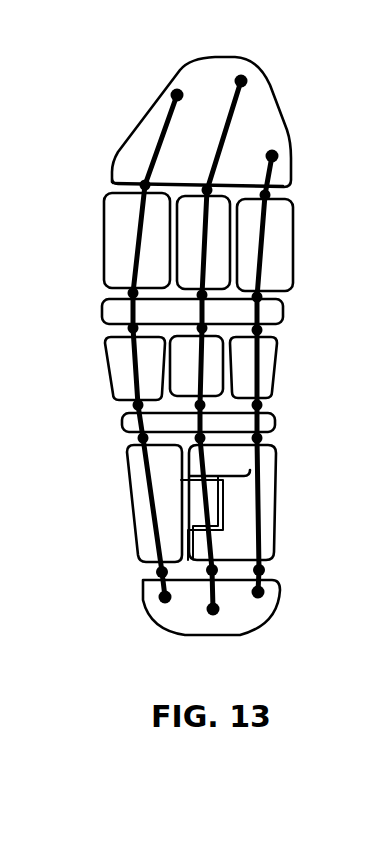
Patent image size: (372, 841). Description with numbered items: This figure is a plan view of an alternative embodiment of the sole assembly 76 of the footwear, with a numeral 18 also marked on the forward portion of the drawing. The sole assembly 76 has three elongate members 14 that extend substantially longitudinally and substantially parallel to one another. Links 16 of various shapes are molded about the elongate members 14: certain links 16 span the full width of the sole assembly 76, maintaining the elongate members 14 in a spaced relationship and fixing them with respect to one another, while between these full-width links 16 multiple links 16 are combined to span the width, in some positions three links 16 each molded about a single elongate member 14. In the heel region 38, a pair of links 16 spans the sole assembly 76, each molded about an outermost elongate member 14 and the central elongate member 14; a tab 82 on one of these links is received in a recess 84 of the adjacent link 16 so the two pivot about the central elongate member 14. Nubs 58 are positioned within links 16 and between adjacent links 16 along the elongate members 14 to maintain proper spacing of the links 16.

The elongate members 14 is at (152, 161).
The links 16 is at (275, 318).
The sole structure 18 is at (133, 150).
The heel region 38 is at (127, 529).
The nubs 58 is at (270, 150).
The sole assembly 76 is at (173, 60).
The tab 82 is at (197, 506).
The recess 84 is at (230, 500).